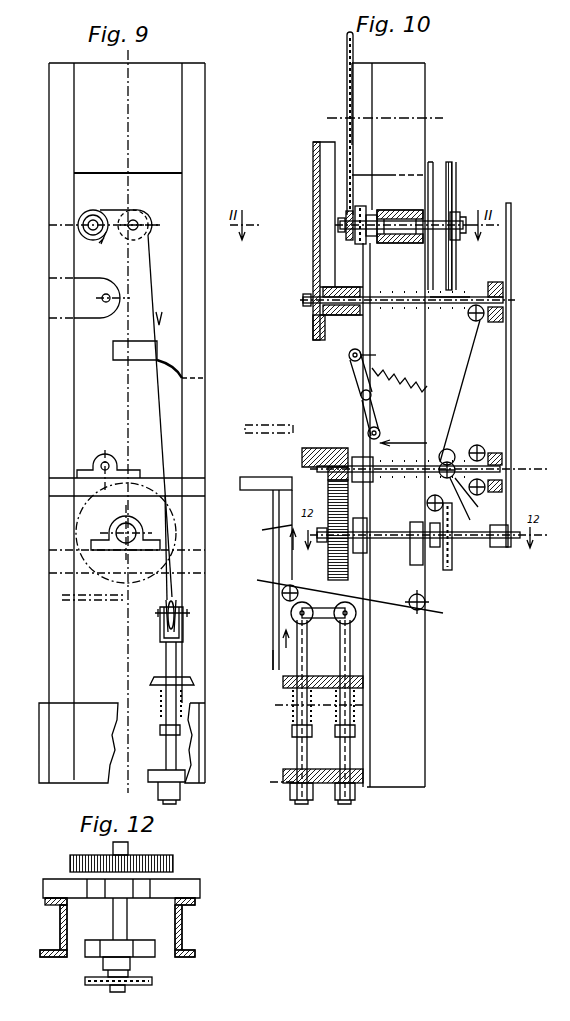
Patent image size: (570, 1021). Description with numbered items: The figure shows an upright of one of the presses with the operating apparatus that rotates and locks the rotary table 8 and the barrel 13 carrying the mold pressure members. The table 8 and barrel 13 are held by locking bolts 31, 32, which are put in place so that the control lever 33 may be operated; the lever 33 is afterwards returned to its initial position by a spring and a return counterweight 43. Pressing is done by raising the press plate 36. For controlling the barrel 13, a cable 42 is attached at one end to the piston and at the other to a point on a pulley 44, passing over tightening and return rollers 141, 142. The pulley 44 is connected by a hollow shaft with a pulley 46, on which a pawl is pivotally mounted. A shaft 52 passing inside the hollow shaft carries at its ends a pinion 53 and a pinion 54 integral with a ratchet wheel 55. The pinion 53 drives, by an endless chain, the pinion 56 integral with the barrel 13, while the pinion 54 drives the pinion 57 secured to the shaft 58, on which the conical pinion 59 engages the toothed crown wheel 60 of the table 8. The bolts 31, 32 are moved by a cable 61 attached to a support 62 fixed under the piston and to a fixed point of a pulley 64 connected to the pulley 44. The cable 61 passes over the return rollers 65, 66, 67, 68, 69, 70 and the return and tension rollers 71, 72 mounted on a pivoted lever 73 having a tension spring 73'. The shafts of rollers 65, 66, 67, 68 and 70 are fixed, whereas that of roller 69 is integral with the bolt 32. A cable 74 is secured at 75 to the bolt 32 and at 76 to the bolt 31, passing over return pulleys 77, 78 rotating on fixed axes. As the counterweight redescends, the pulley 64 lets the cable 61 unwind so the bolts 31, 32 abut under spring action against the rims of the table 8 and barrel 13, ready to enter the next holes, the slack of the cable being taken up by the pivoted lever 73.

In FIG. 10, the table 8 is at (320, 450).
In FIG. 10, the barrel 13 is at (313, 252).
In FIG. 9, the locking bolt 31 is at (100, 298).
In FIG. 10, the locking bolt 31 is at (410, 297).
In FIG. 9, the locking bolt 32 is at (100, 462).
In FIG. 10, the locking bolt 32 is at (405, 465).
In FIG. 10, the lever 33 is at (511, 366).
In FIG. 10, the press plate 36 is at (250, 486).
In FIG. 9, the cable 42 is at (160, 418).
In FIG. 10, the cable 42 is at (365, 262).
In FIG. 9, the return counterweight 43 is at (108, 213).
In FIG. 9, the pulley 44 is at (88, 232).
In FIG. 10, the pulley 44 is at (348, 222).
In FIG. 10, the pulley 46 is at (431, 166).
In FIG. 10, the shaft 52 is at (405, 210).
In FIG. 10, the pinion 53 is at (340, 225).
In FIG. 10, the pinion 54 is at (455, 194).
In FIG. 10, the ratchet wheel 55 is at (450, 168).
In FIG. 10, the pinion 56 is at (346, 52).
In FIG. 10, the pinion 57 is at (452, 566).
In FIG. 12, the pinion 57 is at (152, 981).
In FIG. 10, the shaft 58 is at (390, 540).
In FIG. 12, the shaft 58 is at (120, 917).
In FIG. 10, the conical pinion 59 is at (330, 565).
In FIG. 12, the conical pinion 59 is at (173, 862).
In FIG. 10, the toothed crown wheel 60 is at (330, 484).
In FIG. 10, the cable 61 is at (371, 268).
In FIG. 10, the support 62 is at (272, 655).
In FIG. 10, the pulley 64 is at (365, 210).
In FIG. 10, the return roller 65 is at (339, 589).
In FIG. 10, the return roller 66 is at (437, 608).
In FIG. 10, the return roller 67 is at (427, 500).
In FIG. 10, the return roller 68 is at (486, 492).
In FIG. 10, the return roller 69 is at (465, 506).
In FIG. 10, the return roller 70 is at (485, 455).
In FIG. 10, the return and tension roller 71 is at (381, 436).
In FIG. 10, the return and tension roller 72 is at (349, 353).
In FIG. 10, the pivoted lever 73 is at (336, 377).
In FIG. 10, the tension spring 73' is at (399, 363).
In FIG. 10, the cable 74 is at (464, 374).
In FIG. 10, the attachment point 75 is at (470, 473).
In FIG. 10, the attachment point 76 is at (436, 299).
In FIG. 10, the return pulley 77 is at (452, 455).
In FIG. 10, the return pulley 78 is at (482, 318).
In FIG. 10, the tightening and return roller 141 is at (300, 617).
In FIG. 9, the tightening and return roller 142 is at (182, 612).
In FIG. 10, the tightening and return roller 142 is at (352, 620).